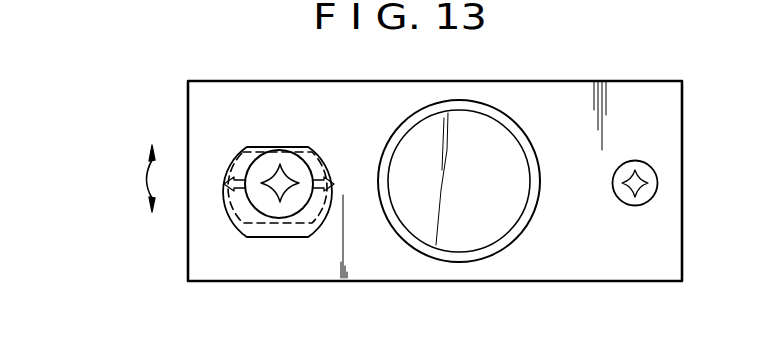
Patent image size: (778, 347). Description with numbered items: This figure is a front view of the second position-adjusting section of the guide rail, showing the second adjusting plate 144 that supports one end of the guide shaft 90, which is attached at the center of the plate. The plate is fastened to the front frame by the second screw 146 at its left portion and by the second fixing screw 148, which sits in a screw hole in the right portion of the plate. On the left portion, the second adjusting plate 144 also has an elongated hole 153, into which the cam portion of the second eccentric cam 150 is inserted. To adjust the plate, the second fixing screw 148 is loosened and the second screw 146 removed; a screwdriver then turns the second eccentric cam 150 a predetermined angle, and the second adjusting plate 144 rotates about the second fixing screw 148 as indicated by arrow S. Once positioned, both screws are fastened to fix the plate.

The second adjusting plate 144 is at (650, 270).
The guide shaft 90 is at (492, 133).
The second fixing screw 148 is at (647, 160).
The second eccentric cam 150 is at (303, 238).
The elongated hole 153 is at (257, 224).
The second screw 146 is at (258, 170).
The arrow S is at (146, 180).